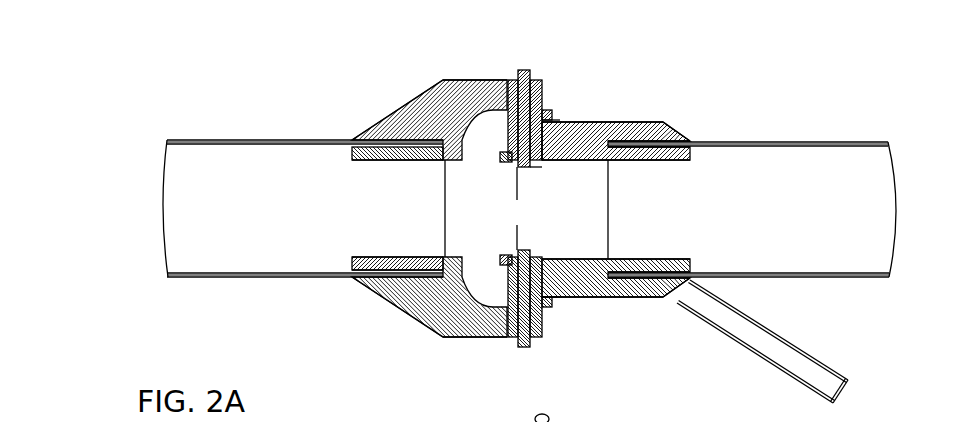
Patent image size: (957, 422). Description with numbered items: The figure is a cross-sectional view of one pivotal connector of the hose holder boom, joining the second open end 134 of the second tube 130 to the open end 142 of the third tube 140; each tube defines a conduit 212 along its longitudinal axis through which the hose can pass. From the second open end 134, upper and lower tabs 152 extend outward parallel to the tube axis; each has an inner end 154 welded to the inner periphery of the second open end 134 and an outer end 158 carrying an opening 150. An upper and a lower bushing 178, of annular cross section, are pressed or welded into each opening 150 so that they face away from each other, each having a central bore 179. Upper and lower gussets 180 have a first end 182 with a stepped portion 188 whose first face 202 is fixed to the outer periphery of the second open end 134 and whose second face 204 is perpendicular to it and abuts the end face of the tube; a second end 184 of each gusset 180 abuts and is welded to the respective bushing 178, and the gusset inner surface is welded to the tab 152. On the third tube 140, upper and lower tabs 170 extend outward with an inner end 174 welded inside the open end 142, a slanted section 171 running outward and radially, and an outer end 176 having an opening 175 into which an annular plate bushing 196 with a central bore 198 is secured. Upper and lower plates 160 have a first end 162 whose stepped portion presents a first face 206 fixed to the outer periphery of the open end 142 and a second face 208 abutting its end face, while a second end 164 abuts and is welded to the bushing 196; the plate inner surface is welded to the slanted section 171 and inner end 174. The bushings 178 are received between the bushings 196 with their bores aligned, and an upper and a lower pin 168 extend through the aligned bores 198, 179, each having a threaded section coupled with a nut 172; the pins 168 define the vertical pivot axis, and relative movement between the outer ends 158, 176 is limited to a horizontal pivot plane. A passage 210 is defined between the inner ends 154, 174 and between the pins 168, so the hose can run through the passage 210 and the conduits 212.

The second tube 130 is at (855, 150).
The second open end 134 is at (805, 274).
The third tube 140 is at (183, 152).
The open end 142 is at (273, 158).
The opening 150 is at (540, 160).
The upper and lower tabs 152 is at (590, 258).
The inner end 154 is at (690, 152).
The outer end 158 is at (502, 155).
The upper and lower plates 160 is at (423, 102).
The first end 162 is at (378, 125).
The second end 164 is at (485, 80).
The upper and lower pins 168 is at (532, 72).
The upper and lower tabs 170 is at (395, 158).
The slanted section 171 is at (445, 170).
The nut 172 is at (691, 351).
The inner end 174 is at (352, 158).
The opening 175 is at (552, 110).
The outer end 176 is at (553, 115).
The upper and lower bushings 178 is at (518, 208).
The central bore 179 is at (542, 257).
The upper and lower gussets 180 is at (635, 127).
The first end 182 is at (672, 130).
The second end 184 is at (567, 127).
The stepped portion 188 is at (635, 147).
The upper and lower bushings 196 is at (513, 83).
The central bore 198 is at (540, 90).
The first face 202 is at (690, 143).
The second face 204 is at (612, 162).
The first face 206 is at (355, 270).
The second face 208 is at (432, 260).
The passage 210 is at (737, 214).
The conduit 212 is at (178, 206).